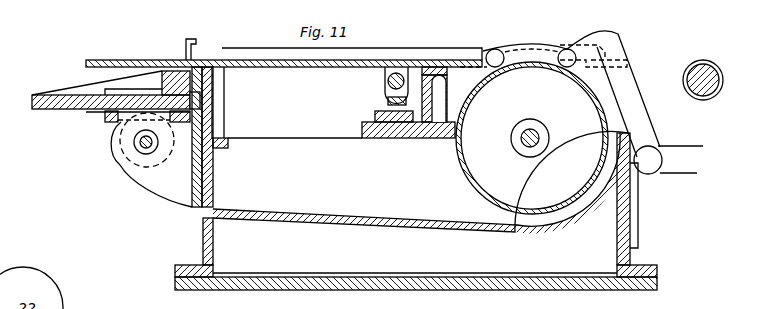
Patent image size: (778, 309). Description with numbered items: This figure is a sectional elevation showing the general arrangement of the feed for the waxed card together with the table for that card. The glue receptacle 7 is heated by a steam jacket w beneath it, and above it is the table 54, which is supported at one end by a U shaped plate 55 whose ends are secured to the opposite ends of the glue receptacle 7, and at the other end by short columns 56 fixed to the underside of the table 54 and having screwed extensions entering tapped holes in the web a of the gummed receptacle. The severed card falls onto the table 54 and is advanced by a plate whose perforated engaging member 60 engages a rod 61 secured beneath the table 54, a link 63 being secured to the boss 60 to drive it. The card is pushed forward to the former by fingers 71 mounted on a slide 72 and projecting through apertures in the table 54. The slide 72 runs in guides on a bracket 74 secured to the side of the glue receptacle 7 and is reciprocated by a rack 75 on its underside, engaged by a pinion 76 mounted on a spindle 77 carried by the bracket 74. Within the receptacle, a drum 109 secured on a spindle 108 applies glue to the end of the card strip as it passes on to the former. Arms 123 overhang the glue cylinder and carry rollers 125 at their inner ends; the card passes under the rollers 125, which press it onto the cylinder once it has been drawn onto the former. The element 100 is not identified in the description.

The glue receptacle 7 is at (416, 178).
The table 54 is at (284, 67).
The U shaped plate 55 is at (438, 60).
The short columns 56 is at (217, 107).
The engaging member 60 is at (387, 94).
The rod 61 is at (388, 81).
The link 63 is at (404, 126).
The fingers 71 is at (190, 39).
The slide 72 is at (88, 110).
The bracket 74 is at (151, 160).
The rack 75 is at (111, 101).
The pinion 76 is at (119, 150).
The spindle 77 is at (141, 149).
The bracket 100 is at (378, 128).
The spindle 108 is at (538, 147).
The drum 109 is at (532, 138).
The arms 123 is at (527, 43).
The rollers 125 is at (560, 64).
The web a is at (226, 151).
The steam jacket w is at (420, 194).